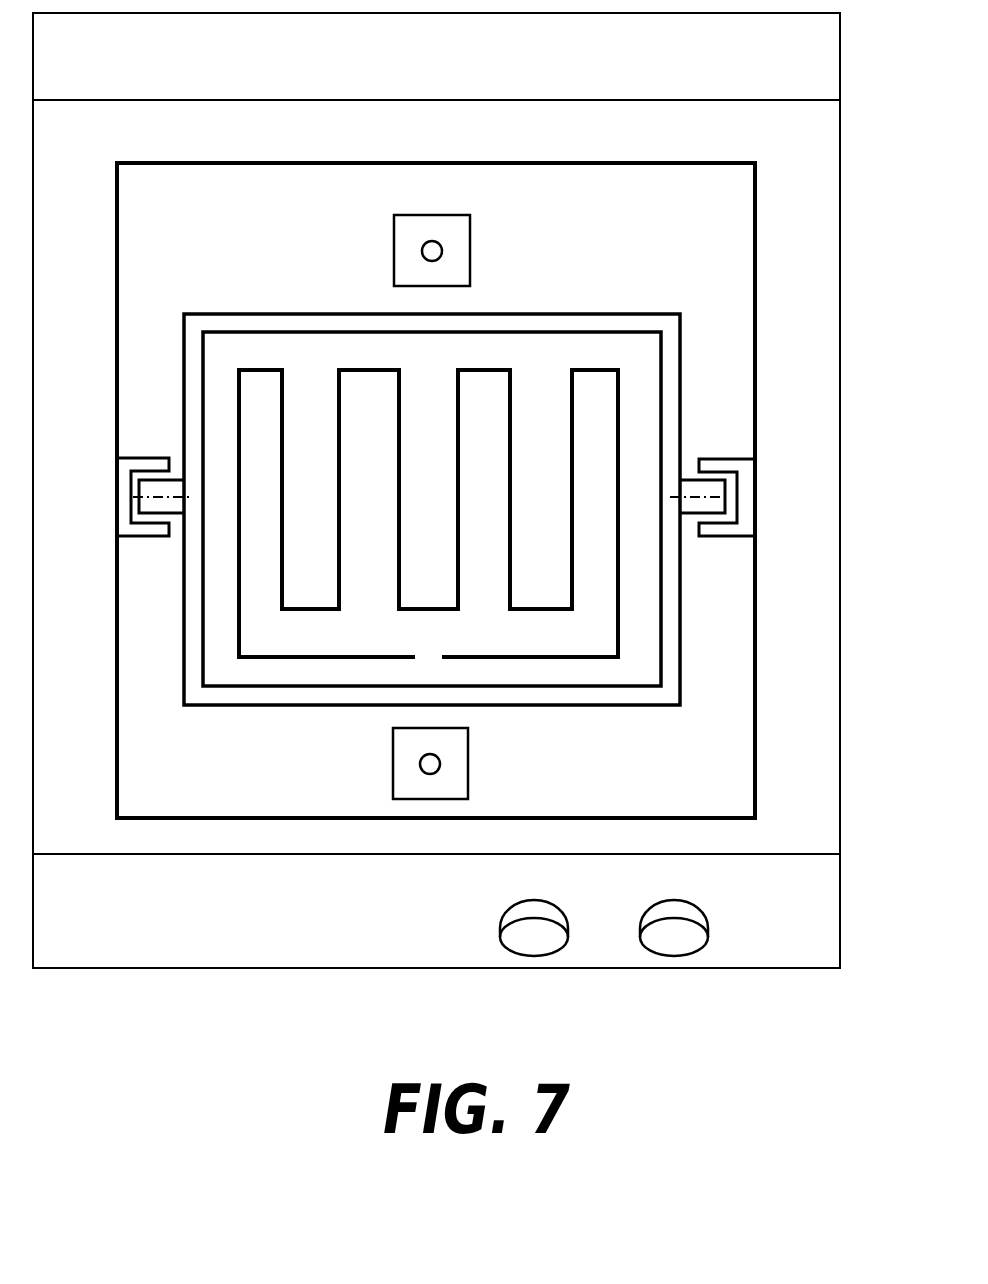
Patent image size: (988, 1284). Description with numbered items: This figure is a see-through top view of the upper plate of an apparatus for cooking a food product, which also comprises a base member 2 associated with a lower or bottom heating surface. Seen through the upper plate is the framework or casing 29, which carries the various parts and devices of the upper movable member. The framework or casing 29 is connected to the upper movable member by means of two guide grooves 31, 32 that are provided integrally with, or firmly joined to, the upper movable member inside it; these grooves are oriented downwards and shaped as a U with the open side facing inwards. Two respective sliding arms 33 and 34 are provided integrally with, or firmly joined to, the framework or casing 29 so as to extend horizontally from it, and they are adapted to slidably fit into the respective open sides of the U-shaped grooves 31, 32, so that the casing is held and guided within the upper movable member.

The base member 2 is at (805, 888).
The framework or casing 29 is at (574, 333).
The guide groove 31 is at (145, 537).
The guide groove 32 is at (730, 538).
The sliding arm 33 is at (153, 487).
The sliding arm 34 is at (707, 486).